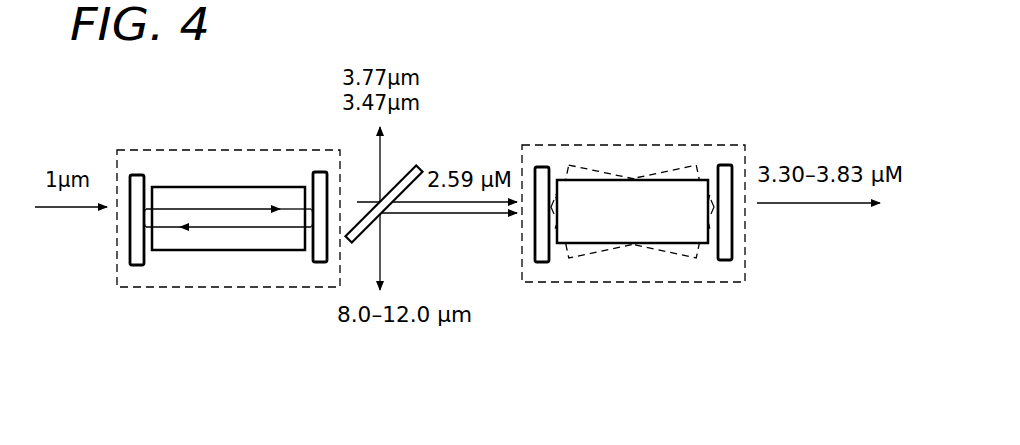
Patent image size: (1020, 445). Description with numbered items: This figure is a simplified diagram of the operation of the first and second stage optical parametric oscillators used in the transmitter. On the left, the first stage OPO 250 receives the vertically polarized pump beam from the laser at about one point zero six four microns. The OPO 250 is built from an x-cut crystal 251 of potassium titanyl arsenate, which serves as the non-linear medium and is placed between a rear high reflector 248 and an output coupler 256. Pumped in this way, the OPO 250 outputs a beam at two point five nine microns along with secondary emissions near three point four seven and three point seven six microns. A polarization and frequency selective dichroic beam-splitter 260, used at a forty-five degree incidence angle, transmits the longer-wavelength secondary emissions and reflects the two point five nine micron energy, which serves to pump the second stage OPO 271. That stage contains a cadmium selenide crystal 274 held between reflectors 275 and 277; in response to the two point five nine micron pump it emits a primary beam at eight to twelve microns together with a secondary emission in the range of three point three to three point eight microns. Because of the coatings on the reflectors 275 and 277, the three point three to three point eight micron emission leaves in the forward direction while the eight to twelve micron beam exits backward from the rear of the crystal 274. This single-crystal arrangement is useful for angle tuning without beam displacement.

The rear high reflector 248 is at (130, 247).
The first optical parametric oscillator 250 is at (208, 290).
The x-cut crystal 251 is at (163, 186).
The output coupler 256 is at (318, 265).
The dichroic beam-splitter 260 is at (418, 176).
The second stage OPO 271 is at (727, 144).
The crystal 274 is at (635, 230).
The reflector 275 is at (533, 247).
The reflector 277 is at (732, 233).